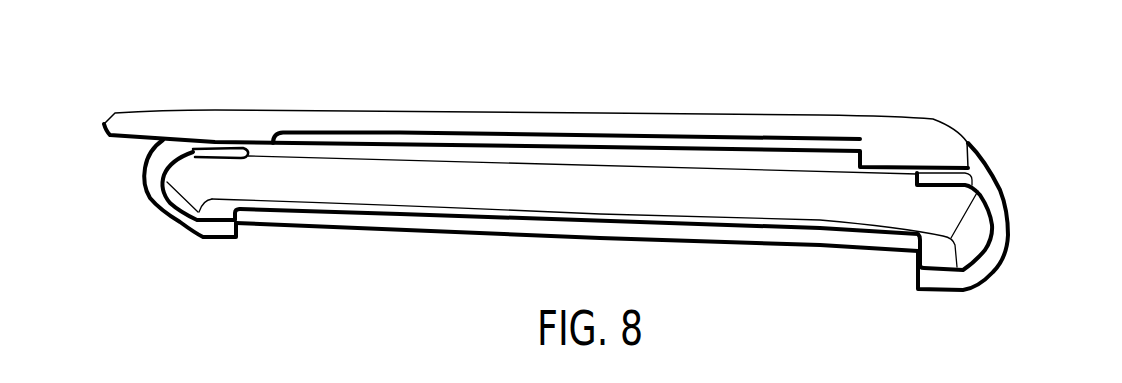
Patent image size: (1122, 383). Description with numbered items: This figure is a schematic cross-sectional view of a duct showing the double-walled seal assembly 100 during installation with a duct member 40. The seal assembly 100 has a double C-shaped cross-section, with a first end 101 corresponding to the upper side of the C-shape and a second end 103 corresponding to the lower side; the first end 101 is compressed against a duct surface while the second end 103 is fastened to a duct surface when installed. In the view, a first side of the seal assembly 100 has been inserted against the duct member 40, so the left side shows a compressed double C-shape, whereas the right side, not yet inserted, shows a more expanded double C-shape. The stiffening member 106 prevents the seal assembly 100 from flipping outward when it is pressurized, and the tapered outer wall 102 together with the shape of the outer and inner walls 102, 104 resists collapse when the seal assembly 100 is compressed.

The duct member 40 is at (884, 126).
The double-walled seal assembly 100 is at (1038, 166).
The first end 101 is at (996, 130).
The outer wall 102 is at (143, 172).
The second end 103 is at (1000, 290).
The inner wall 104 is at (157, 198).
The stiffening member 106 is at (211, 151).